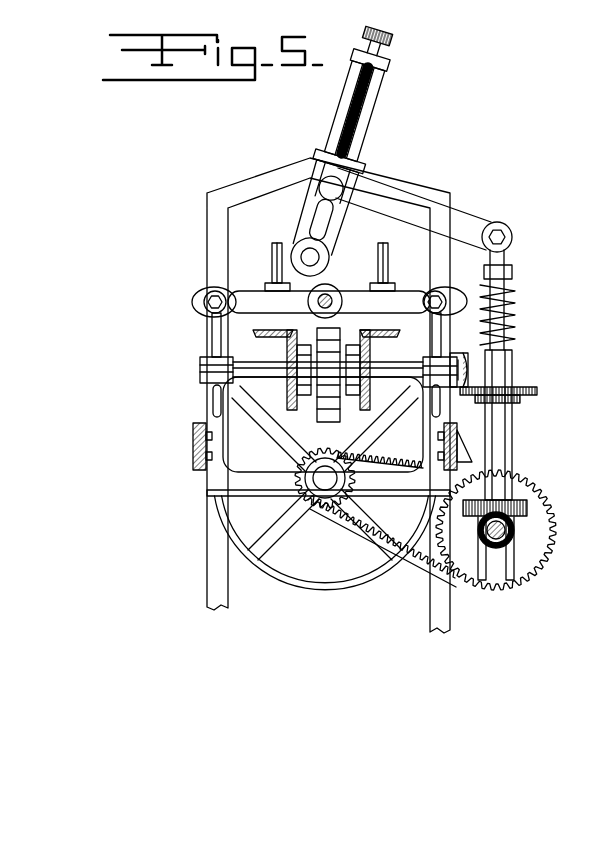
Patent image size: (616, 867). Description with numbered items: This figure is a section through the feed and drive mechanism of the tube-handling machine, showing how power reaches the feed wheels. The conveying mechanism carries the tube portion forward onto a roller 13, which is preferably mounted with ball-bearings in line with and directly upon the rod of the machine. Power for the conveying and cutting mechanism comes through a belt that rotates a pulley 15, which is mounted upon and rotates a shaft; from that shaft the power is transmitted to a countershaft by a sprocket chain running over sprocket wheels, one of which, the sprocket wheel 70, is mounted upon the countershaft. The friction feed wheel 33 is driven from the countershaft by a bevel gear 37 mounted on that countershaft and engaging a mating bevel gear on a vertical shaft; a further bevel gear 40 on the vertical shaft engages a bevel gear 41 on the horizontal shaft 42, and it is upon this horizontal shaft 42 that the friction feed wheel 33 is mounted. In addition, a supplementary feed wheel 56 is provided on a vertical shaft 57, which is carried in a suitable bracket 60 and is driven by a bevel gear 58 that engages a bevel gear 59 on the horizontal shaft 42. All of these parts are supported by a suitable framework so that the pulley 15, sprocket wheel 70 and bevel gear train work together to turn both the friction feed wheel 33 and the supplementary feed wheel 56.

The roller 13 is at (330, 296).
The pulley 15 is at (297, 581).
The friction feed wheel 33 is at (278, 436).
The bevel gear 37 is at (516, 530).
The bevel gear 40 is at (535, 391).
The bevel gear 41 is at (470, 383).
The horizontal shaft 42 is at (408, 378).
The supplementary feed wheel 56 is at (400, 298).
The vertical shaft 57 is at (272, 250).
The bevel gear 58 is at (250, 332).
The bevel gear 59 is at (287, 350).
The bracket 60 is at (230, 318).
The sprocket wheel 70 is at (540, 543).